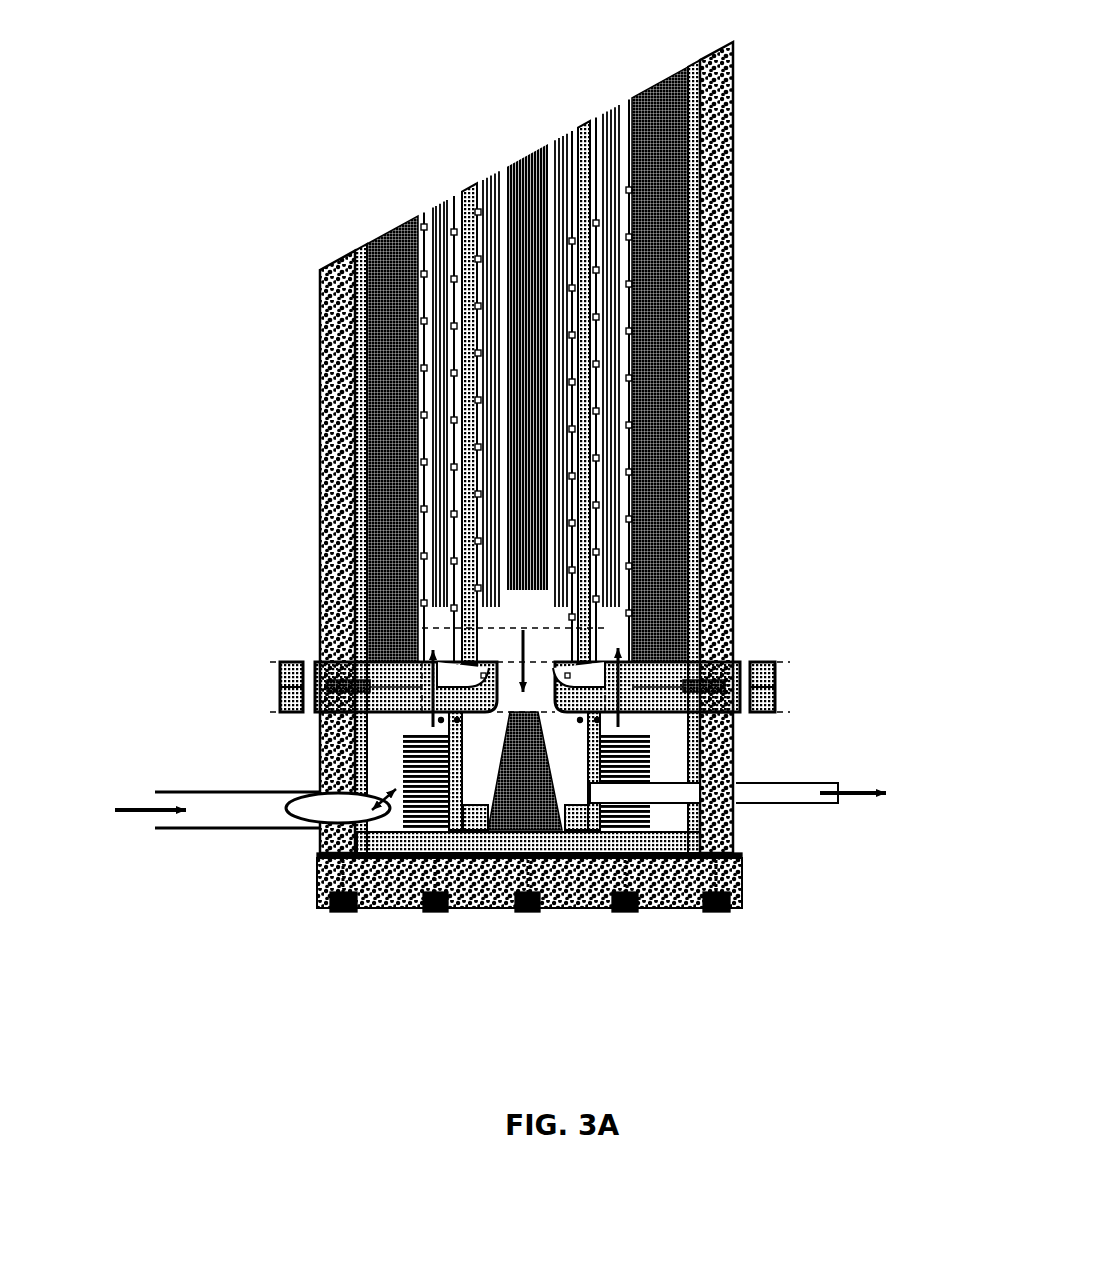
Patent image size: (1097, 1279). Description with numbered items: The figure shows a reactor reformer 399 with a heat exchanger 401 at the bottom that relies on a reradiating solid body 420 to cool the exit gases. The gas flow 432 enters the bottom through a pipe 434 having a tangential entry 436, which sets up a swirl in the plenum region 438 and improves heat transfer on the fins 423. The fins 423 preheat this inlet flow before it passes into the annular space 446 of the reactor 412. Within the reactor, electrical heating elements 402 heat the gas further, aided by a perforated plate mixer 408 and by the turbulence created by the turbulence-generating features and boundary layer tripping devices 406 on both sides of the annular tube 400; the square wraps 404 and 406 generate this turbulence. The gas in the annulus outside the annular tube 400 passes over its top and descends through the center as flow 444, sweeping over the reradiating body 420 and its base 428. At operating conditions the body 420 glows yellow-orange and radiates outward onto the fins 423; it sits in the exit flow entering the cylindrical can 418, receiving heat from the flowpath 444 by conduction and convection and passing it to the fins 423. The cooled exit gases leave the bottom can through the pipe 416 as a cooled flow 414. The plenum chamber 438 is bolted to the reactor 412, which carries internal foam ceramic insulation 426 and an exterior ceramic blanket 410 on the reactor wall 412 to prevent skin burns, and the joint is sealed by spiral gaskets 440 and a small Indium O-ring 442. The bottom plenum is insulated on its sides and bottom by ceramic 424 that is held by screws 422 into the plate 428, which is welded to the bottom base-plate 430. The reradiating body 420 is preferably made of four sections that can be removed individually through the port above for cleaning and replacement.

The reactor reformer 399 is at (852, 88).
The annular tube 400 is at (590, 188).
The heat exchanger 401 is at (722, 762).
The electrical heating elements 402 is at (627, 257).
The square wraps 404 is at (628, 376).
The turbulence-generating features and boundary layer tripping devices 406 is at (598, 500).
The perforated plate mixer 408 is at (632, 657).
The exterior ceramic blanket 410 is at (718, 485).
The reactor wall 412 is at (692, 642).
The cooled flow 414 is at (862, 790).
The pipe 416 is at (753, 804).
The cylindrical can 418 is at (597, 830).
The reradiating solid body 420 is at (543, 815).
The screws 422 is at (530, 912).
The fins 423 is at (415, 829).
The ceramic insulation 424 is at (402, 897).
The internal foam ceramic insulation 426 is at (385, 493).
The base 428 is at (318, 863).
The bottom base-plate 430 is at (372, 838).
The gas flow 432 is at (140, 815).
The pipe 434 is at (202, 797).
The tangential entry 436 is at (317, 790).
The plenum region 438 is at (382, 773).
The spiral gaskets 440 is at (330, 678).
The Indium O-ring 442 is at (480, 675).
The flow 444 is at (518, 647).
The annular space 446 is at (430, 697).